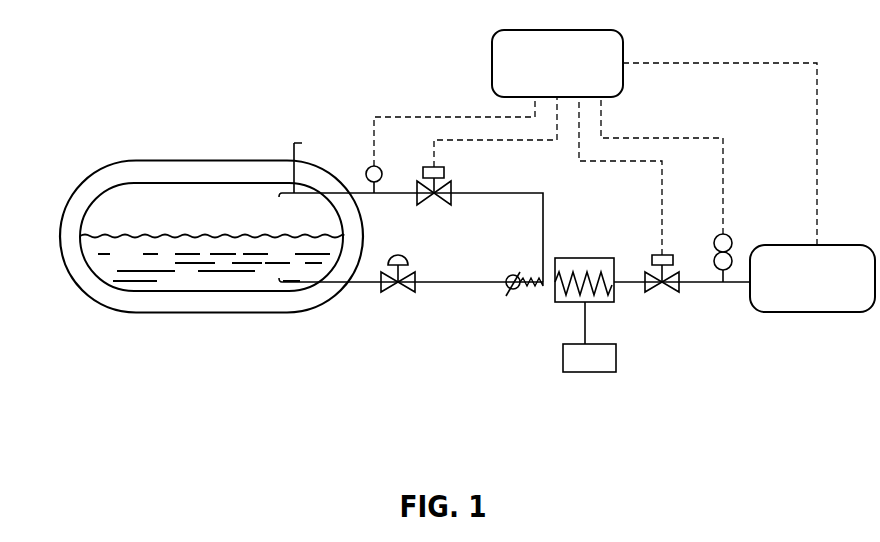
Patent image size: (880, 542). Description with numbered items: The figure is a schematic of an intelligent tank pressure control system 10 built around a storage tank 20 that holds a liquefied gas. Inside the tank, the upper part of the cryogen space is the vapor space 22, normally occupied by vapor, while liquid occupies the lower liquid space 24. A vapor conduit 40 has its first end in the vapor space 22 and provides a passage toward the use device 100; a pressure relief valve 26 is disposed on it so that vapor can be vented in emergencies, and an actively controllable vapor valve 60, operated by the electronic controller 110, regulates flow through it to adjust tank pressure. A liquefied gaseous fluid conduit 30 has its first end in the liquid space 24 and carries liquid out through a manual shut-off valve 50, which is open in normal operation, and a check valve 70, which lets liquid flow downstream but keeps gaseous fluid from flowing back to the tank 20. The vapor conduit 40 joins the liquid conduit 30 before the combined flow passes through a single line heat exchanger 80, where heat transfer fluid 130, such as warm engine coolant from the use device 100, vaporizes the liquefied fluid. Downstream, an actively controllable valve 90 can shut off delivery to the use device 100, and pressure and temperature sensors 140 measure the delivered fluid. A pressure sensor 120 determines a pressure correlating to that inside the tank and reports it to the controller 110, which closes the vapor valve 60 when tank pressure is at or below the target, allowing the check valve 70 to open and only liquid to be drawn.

The intelligent tank pressure control system 10 is at (287, 72).
The storage tank 20 is at (124, 160).
The vapor space 22 is at (135, 198).
The liquid space 24 is at (155, 282).
The pressure relief valve 26 is at (290, 150).
The liquefied gaseous fluid conduit 30 is at (357, 284).
The vapor conduit 40 is at (400, 195).
The manual shut-off valve 50 is at (393, 286).
The actively controllable vapor valve 60 is at (438, 196).
The check valve 70 is at (509, 297).
The single line heat exchanger 80 is at (555, 303).
The actively controllable valve 90 is at (668, 286).
The use device 100 is at (749, 187).
The electronic controller 110 is at (557, 63).
The pressure sensor 120 is at (366, 175).
The heat transfer fluid 130 is at (589, 337).
The pressure and temperature sensors 140 is at (733, 244).